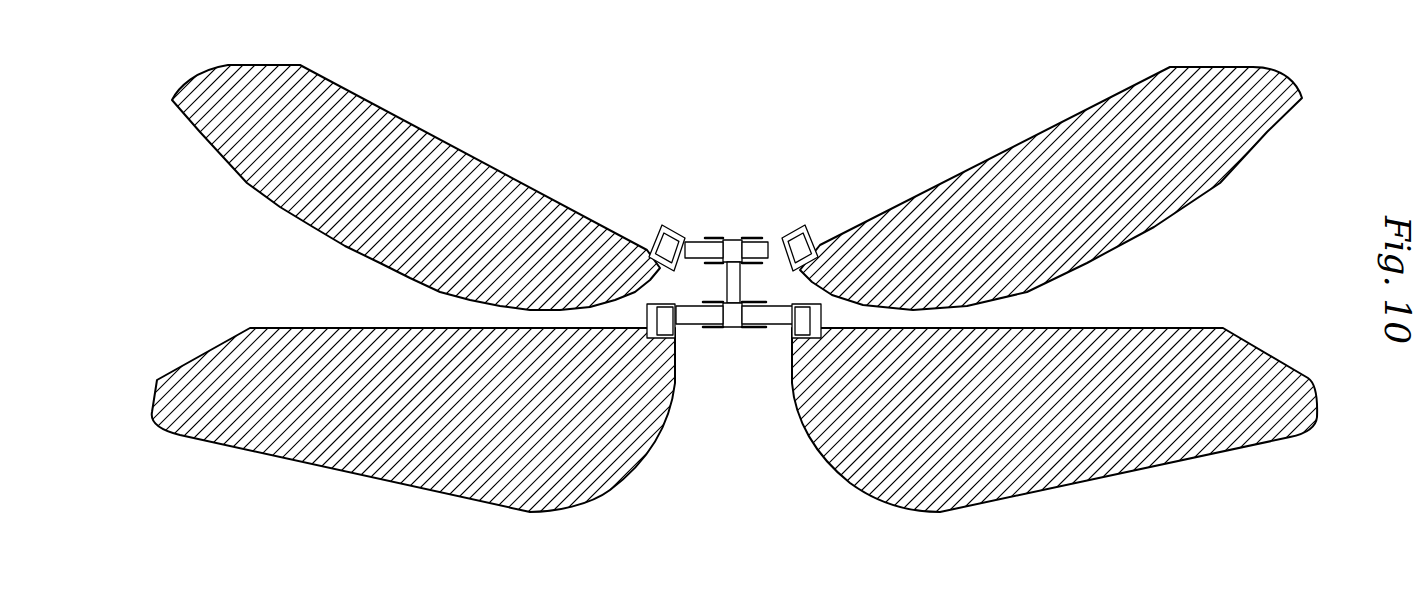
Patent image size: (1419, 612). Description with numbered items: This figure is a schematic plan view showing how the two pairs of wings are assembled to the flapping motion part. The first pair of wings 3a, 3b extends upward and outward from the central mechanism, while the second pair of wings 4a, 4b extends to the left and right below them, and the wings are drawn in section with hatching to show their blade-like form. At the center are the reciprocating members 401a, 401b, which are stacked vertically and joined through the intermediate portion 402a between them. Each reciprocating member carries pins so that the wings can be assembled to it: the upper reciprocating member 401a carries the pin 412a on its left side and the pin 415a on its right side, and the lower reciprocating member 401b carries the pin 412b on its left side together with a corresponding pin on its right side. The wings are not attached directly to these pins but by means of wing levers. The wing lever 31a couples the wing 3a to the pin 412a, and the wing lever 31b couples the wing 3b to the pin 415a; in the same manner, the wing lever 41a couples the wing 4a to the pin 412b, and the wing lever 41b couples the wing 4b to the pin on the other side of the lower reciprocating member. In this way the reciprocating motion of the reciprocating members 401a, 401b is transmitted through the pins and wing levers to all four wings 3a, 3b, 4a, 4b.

The wing 3a is at (172, 100).
The wing 3b is at (1120, 93).
The wing 4a is at (157, 392).
The wing 4b is at (1130, 328).
The wing lever 31a is at (698, 237).
The wing lever 31b is at (781, 237).
The reciprocating member 401a is at (733, 237).
The connecting shaft 402a is at (744, 274).
The pin 412a is at (715, 263).
The pin 415a is at (757, 237).
The reciprocating member 401b is at (740, 327).
The wing lever 41a is at (695, 327).
The wing lever 41b is at (775, 327).
The pin 412b is at (713, 327).